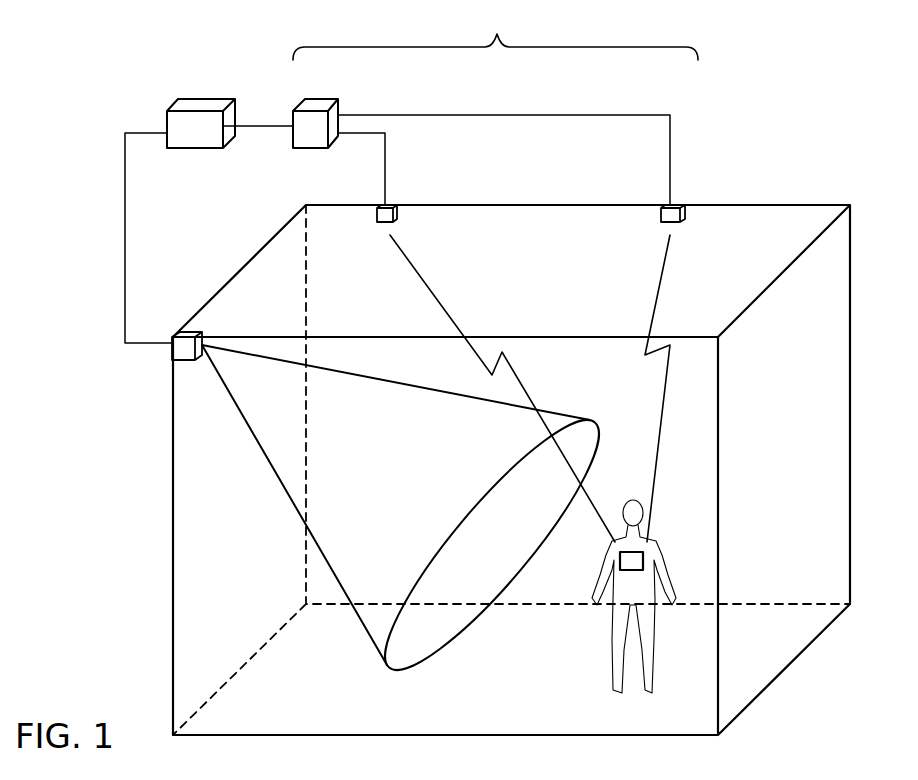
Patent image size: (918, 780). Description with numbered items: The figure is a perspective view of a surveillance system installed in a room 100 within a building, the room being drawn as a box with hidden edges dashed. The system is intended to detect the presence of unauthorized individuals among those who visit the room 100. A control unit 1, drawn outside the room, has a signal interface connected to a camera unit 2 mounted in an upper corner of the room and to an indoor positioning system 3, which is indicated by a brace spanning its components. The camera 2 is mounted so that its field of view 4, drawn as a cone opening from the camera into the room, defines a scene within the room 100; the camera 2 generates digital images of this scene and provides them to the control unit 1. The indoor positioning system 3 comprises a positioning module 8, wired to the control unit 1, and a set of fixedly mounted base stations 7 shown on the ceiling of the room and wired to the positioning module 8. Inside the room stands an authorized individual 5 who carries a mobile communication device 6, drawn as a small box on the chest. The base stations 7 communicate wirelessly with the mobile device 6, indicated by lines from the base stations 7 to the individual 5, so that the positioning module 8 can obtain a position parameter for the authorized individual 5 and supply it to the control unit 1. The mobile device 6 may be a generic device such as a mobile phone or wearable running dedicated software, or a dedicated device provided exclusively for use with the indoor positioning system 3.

The control unit 1 is at (198, 103).
The camera unit 2 is at (183, 353).
The indoor positioning system 3 is at (495, 31).
The field of view 4 is at (278, 475).
The authorized individual 5 is at (653, 545).
The mobile communication device 6 is at (620, 558).
The base stations 7 is at (393, 205).
The positioning module 8 is at (318, 103).
The room 100 is at (785, 205).